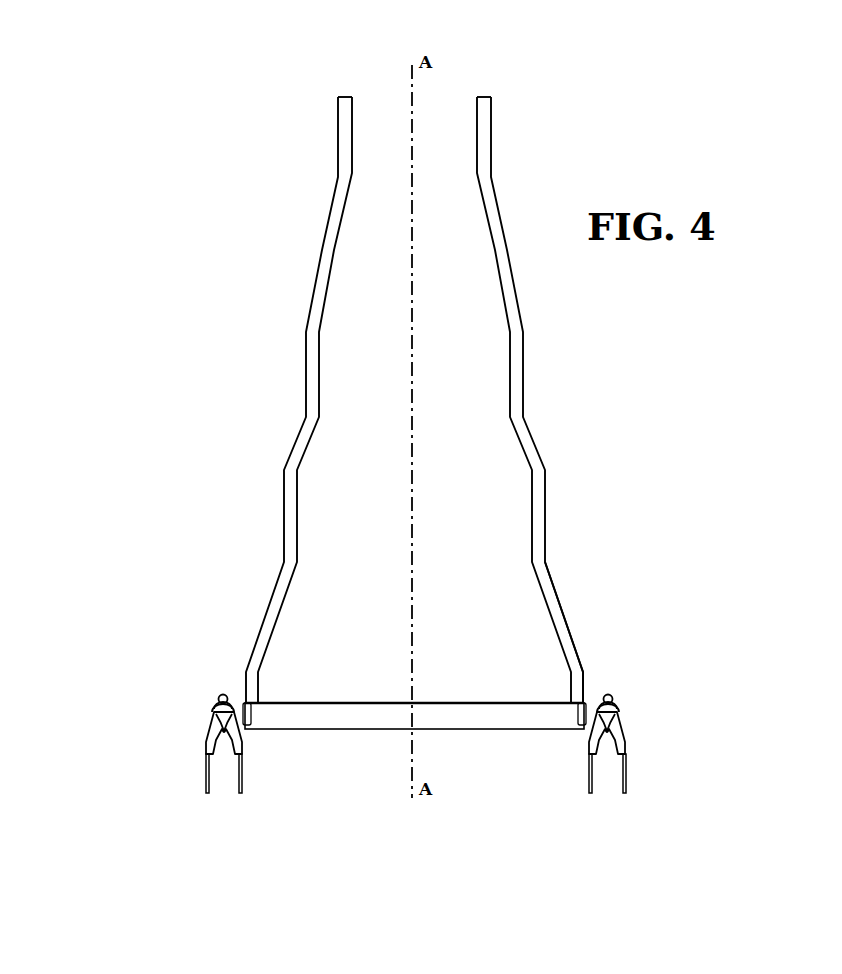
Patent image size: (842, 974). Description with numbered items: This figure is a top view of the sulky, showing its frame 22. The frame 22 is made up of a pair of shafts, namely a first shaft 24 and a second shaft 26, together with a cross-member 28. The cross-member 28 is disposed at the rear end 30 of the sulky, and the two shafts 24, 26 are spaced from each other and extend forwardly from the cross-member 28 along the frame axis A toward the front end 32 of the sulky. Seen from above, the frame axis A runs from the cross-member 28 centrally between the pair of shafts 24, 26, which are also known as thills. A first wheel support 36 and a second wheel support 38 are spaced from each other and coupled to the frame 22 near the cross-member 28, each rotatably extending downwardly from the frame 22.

The frame 22 is at (588, 616).
The first shaft 24 is at (524, 447).
The second shaft 26 is at (303, 444).
The cross-member 28 is at (344, 718).
The rear end 30 is at (190, 735).
The front end 32 is at (193, 212).
The first wheel support 36 is at (640, 768).
The second wheel support 38 is at (225, 800).